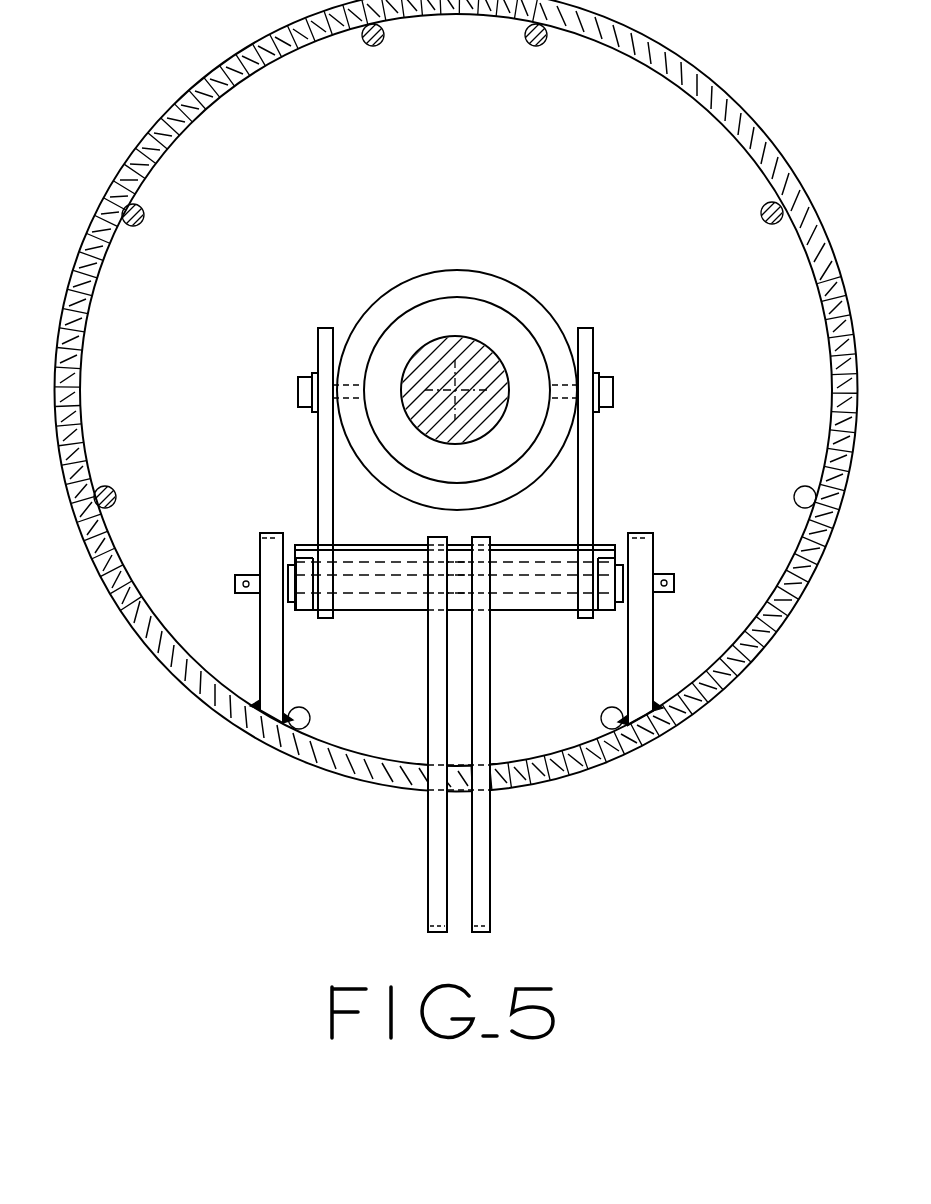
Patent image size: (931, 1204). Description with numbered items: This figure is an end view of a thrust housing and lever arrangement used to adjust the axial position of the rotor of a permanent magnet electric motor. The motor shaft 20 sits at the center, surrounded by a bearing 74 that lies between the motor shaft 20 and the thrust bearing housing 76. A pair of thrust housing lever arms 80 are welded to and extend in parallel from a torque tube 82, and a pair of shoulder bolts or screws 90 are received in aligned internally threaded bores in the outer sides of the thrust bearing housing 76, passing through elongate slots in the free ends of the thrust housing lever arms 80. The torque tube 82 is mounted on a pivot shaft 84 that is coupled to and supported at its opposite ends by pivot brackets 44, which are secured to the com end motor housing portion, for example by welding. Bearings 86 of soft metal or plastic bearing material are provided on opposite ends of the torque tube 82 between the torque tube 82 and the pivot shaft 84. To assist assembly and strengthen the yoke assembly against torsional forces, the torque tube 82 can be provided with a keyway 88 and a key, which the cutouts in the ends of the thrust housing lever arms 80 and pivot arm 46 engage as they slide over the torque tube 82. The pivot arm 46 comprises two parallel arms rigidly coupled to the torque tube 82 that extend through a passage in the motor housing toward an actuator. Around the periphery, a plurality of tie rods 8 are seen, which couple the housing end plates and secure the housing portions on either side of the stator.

The tie rods 8 is at (373, 46).
The motor shaft 20 is at (450, 421).
The pivot brackets 44 is at (262, 640).
The pivot arm 46 is at (427, 885).
The bearing 74 is at (440, 336).
The thrust bearing housing 76 is at (527, 304).
The thrust housing lever arms 80 is at (320, 470).
The torque tube 82 is at (398, 614).
The pivot shaft 84 is at (675, 582).
The bearings 86 is at (292, 560).
The keyway 88 is at (565, 500).
The shoulder bolts or screws 90 is at (298, 400).